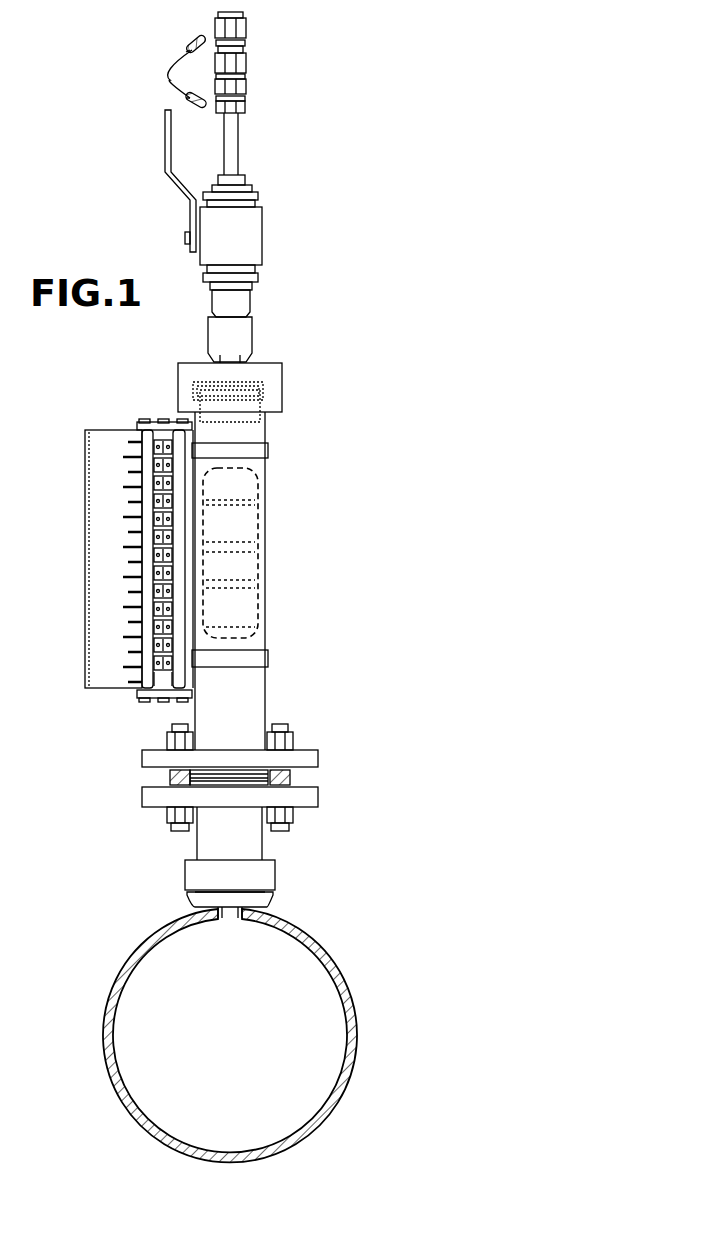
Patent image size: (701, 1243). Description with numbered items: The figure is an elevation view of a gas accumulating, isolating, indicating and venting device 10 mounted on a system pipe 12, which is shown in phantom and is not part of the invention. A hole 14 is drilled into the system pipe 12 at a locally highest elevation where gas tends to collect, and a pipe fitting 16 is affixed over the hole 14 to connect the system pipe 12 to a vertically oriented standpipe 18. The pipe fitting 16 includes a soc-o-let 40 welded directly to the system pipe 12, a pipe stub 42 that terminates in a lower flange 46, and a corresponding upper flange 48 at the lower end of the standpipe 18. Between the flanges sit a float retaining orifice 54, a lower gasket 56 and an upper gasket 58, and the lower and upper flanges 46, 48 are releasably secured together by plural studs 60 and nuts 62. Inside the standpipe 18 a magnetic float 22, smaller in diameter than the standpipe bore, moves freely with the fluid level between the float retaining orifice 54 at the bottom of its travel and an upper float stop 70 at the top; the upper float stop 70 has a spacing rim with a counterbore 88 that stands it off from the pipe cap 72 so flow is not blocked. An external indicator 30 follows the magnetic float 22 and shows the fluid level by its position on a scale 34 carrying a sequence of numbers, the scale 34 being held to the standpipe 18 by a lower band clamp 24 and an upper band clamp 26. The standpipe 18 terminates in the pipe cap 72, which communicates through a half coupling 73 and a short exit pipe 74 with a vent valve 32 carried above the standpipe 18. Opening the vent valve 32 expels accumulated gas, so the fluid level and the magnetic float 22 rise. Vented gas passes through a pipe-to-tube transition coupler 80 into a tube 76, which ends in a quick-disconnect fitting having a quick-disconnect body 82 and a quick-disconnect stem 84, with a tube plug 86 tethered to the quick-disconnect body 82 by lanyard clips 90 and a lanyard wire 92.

The gas accumulating, isolating, indicating and venting device 10 is at (450, 192).
The system pipe 12 is at (105, 1008).
The hole 14 is at (231, 915).
The pipe fitting 16 is at (272, 893).
The standpipe 18 is at (250, 700).
The magnetic float 22 is at (252, 558).
The lower band clamp 24 is at (255, 660).
The upper band clamp 26 is at (258, 450).
The indicator 30 is at (155, 495).
The vent valve 32 is at (250, 218).
The scale 34 is at (85, 545).
The soc-o-let 40 is at (195, 900).
The pipe stub 42 is at (263, 843).
The lower flange 46 is at (318, 797).
The upper flange 48 is at (318, 760).
The float retaining orifice 54 is at (172, 777).
The lower gasket 56 is at (218, 788).
The upper gasket 58 is at (245, 772).
The studs 60 is at (182, 832).
The nuts 62 is at (168, 735).
The upper float stop 70 is at (262, 405).
The pipe cap 72 is at (268, 377).
The half coupling 73 is at (240, 345).
The exit pipe 74 is at (235, 305).
The tube 76 is at (235, 147).
The pipe-to-tube transition coupler 80 is at (245, 180).
The quick-disconnect body 82 is at (238, 88).
The quick-disconnect stem 84 is at (240, 65).
The tube plug 86 is at (238, 32).
The counterbore 88 is at (208, 388).
The lanyard clips 90 is at (190, 38).
The lanyard wire 92 is at (170, 74).